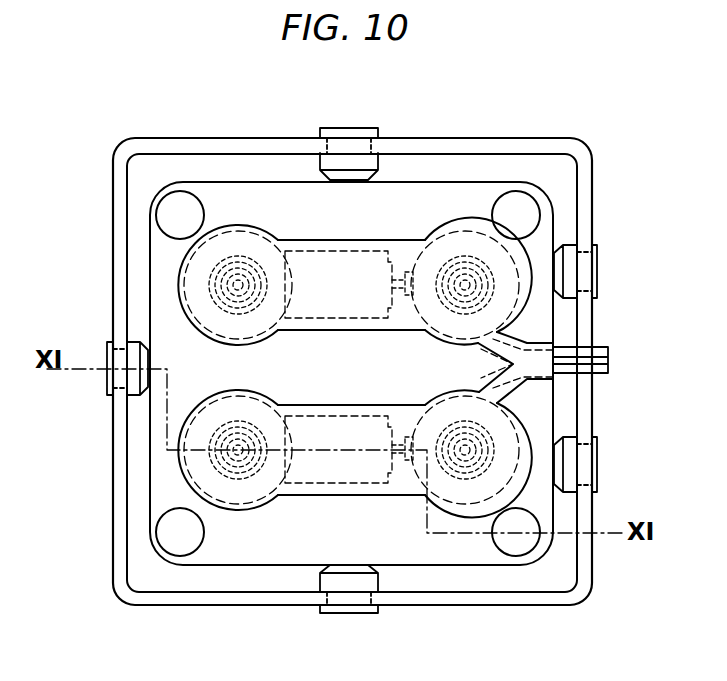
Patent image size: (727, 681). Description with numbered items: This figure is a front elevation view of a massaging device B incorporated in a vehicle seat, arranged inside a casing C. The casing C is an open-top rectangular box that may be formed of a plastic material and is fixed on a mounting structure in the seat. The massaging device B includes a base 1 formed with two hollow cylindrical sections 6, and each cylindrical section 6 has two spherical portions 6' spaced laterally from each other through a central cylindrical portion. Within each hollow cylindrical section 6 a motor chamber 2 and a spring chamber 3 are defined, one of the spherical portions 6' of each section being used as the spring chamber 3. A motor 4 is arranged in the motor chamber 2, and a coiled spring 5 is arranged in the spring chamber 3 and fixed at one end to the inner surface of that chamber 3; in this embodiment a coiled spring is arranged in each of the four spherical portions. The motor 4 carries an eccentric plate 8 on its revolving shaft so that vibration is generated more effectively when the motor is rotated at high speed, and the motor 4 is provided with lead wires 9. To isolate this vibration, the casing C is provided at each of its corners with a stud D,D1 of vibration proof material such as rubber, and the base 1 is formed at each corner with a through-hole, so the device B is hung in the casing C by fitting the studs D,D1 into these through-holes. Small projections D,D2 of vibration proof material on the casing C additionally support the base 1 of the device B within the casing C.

The base 1 is at (423, 172).
The motor chamber 2 is at (361, 252).
The spring chamber 3 is at (471, 233).
The motor 4 is at (314, 312).
The coiled spring 5 is at (447, 257).
The hollow cylindrical section 6 is at (354, 352).
The spherical portion 6' is at (320, 343).
The eccentric plate 8 is at (407, 272).
The lead wires 9 is at (598, 352).
The massaging device B is at (147, 297).
The casing C is at (226, 138).
The stud of vibration proof material D,D1 is at (178, 205).
The small projection of vibration proof material D,D2 is at (348, 165).